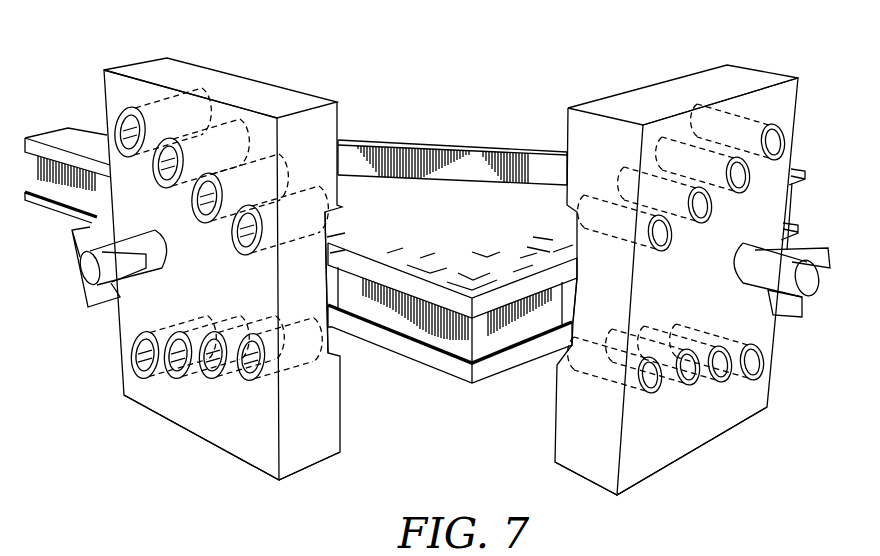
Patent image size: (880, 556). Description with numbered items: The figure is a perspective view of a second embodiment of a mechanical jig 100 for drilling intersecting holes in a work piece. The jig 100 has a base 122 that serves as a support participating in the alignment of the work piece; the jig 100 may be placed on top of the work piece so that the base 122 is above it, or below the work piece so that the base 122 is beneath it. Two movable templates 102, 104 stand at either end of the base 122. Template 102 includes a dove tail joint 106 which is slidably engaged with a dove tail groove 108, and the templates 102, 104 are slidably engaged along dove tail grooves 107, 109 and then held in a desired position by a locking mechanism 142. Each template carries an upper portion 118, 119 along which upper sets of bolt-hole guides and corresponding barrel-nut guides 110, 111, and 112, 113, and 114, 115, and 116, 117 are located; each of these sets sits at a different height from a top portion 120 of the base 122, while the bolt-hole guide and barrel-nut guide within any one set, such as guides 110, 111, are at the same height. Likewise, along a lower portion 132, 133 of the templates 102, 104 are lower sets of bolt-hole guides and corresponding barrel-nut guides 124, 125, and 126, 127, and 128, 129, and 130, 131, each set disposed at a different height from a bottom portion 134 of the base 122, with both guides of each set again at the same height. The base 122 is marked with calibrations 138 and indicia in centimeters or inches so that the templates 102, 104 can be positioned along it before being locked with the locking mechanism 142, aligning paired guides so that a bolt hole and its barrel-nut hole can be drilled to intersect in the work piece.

The mechanical jig 100 is at (463, 63).
The template 102 is at (785, 97).
The template 104 is at (113, 97).
The dove tail joint 106 is at (563, 310).
The dove tail groove 107 is at (335, 285).
The dove tail groove 108 is at (483, 335).
The dove tail groove 109 is at (415, 327).
The bolt-hole guide 110 is at (612, 213).
The barrel-nut guide 111 is at (295, 200).
The bolt-hole guide 112 is at (652, 190).
The barrel-nut guide 113 is at (260, 173).
The bolt-hole guide 114 is at (677, 147).
The barrel-nut guide 115 is at (217, 137).
The bolt-hole guide 116 is at (730, 122).
The barrel-nut guide 117 is at (157, 100).
The upper portion 118 is at (565, 135).
The upper portion 119 is at (340, 132).
The top portion 120 is at (410, 200).
The base 122 is at (492, 200).
The bolt-hole guide 124 is at (650, 380).
The barrel-nut guide 125 is at (270, 373).
The bolt-hole guide 126 is at (672, 378).
The barrel-nut guide 127 is at (232, 377).
The bolt-hole guide 128 is at (703, 375).
The barrel-nut guide 129 is at (200, 378).
The bolt-hole guide 130 is at (733, 373).
The barrel-nut guide 131 is at (163, 377).
The lower portion 132 is at (560, 475).
The lower portion 133 is at (317, 473).
The bottom portion 134 is at (485, 367).
The calibrations 138 is at (378, 240).
The locking mechanism 142 is at (92, 265).